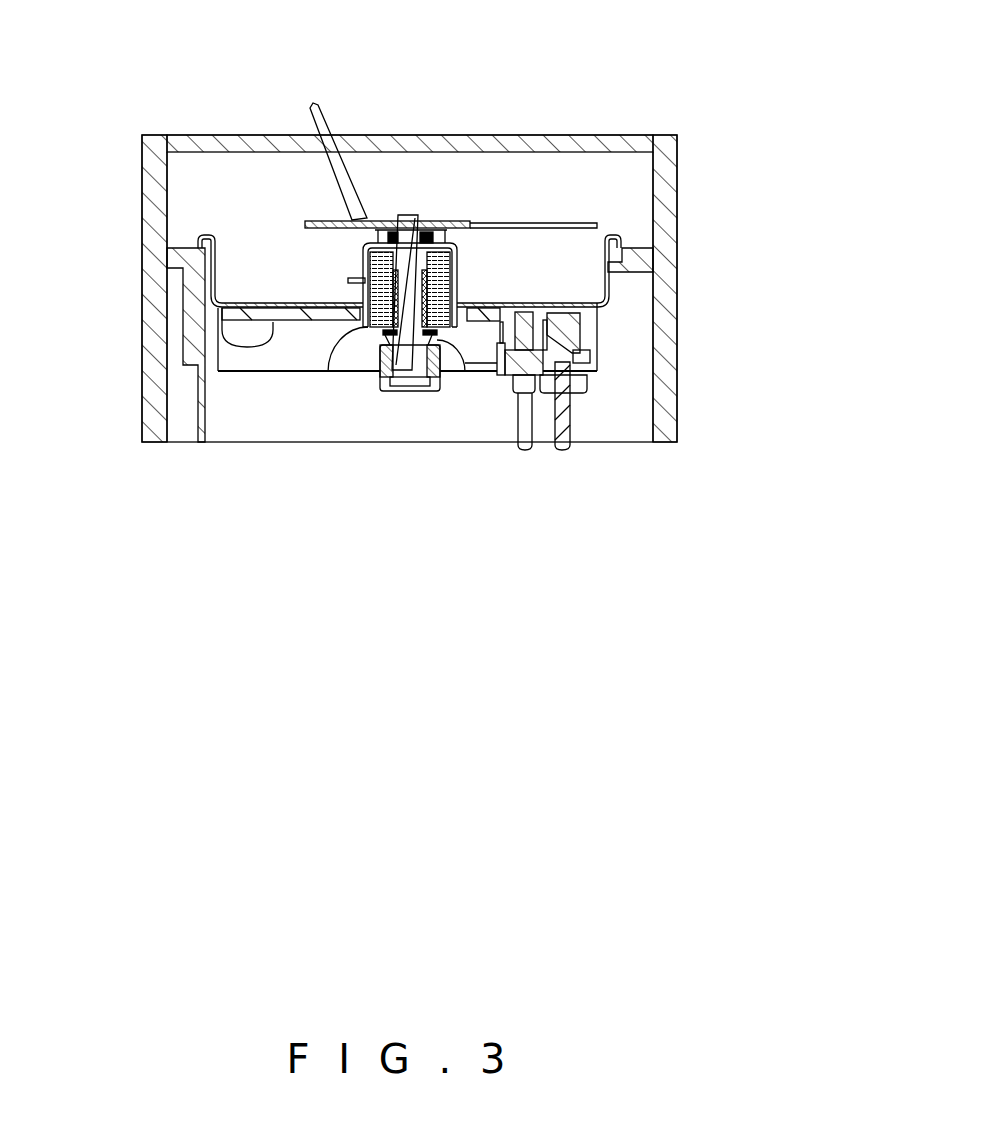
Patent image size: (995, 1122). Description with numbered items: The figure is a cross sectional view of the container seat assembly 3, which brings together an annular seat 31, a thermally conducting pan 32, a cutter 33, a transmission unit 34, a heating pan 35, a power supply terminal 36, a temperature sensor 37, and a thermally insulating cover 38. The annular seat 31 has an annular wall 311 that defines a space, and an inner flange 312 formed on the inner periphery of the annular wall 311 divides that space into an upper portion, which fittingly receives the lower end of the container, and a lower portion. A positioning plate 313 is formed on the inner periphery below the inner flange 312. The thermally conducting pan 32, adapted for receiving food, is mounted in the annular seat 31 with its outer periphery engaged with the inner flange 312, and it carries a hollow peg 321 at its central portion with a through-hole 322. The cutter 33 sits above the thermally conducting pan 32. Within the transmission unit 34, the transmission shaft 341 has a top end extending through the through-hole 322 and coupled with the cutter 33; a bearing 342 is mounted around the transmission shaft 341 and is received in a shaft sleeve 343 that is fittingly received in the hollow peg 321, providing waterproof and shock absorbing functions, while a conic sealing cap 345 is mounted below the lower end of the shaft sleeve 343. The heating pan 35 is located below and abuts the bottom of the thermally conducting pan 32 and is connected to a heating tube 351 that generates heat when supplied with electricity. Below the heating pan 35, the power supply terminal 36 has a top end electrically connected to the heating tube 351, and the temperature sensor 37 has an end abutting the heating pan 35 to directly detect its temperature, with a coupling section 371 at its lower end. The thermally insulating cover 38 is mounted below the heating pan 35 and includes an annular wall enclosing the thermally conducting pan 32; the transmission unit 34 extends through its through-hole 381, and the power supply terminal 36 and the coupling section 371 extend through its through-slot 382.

The container seat assembly 3 is at (697, 232).
The annular seat 31 is at (680, 200).
The annular wall 311 is at (662, 175).
The inner flange 312 is at (628, 262).
The positioning plate 313 is at (203, 415).
The thermally conducting pan 32 is at (293, 302).
The hollow peg 321 is at (458, 283).
The through-hole 322 is at (457, 243).
The cutter 33 is at (337, 165).
The transmission unit 34 is at (283, 332).
The transmission shaft 341 is at (418, 220).
The bearing 342 is at (365, 328).
The shaft sleeve 343 is at (458, 267).
The conic sealing cap 345 is at (460, 358).
The heating pan 35 is at (308, 312).
The heating tube 351 is at (247, 323).
The power supply terminal 36 is at (563, 415).
The temperature sensor 37 is at (530, 365).
The coupling section 371 is at (527, 433).
The thermally insulating cover 38 is at (233, 372).
The through-hole 381 is at (380, 380).
The through-slot 382 is at (503, 372).